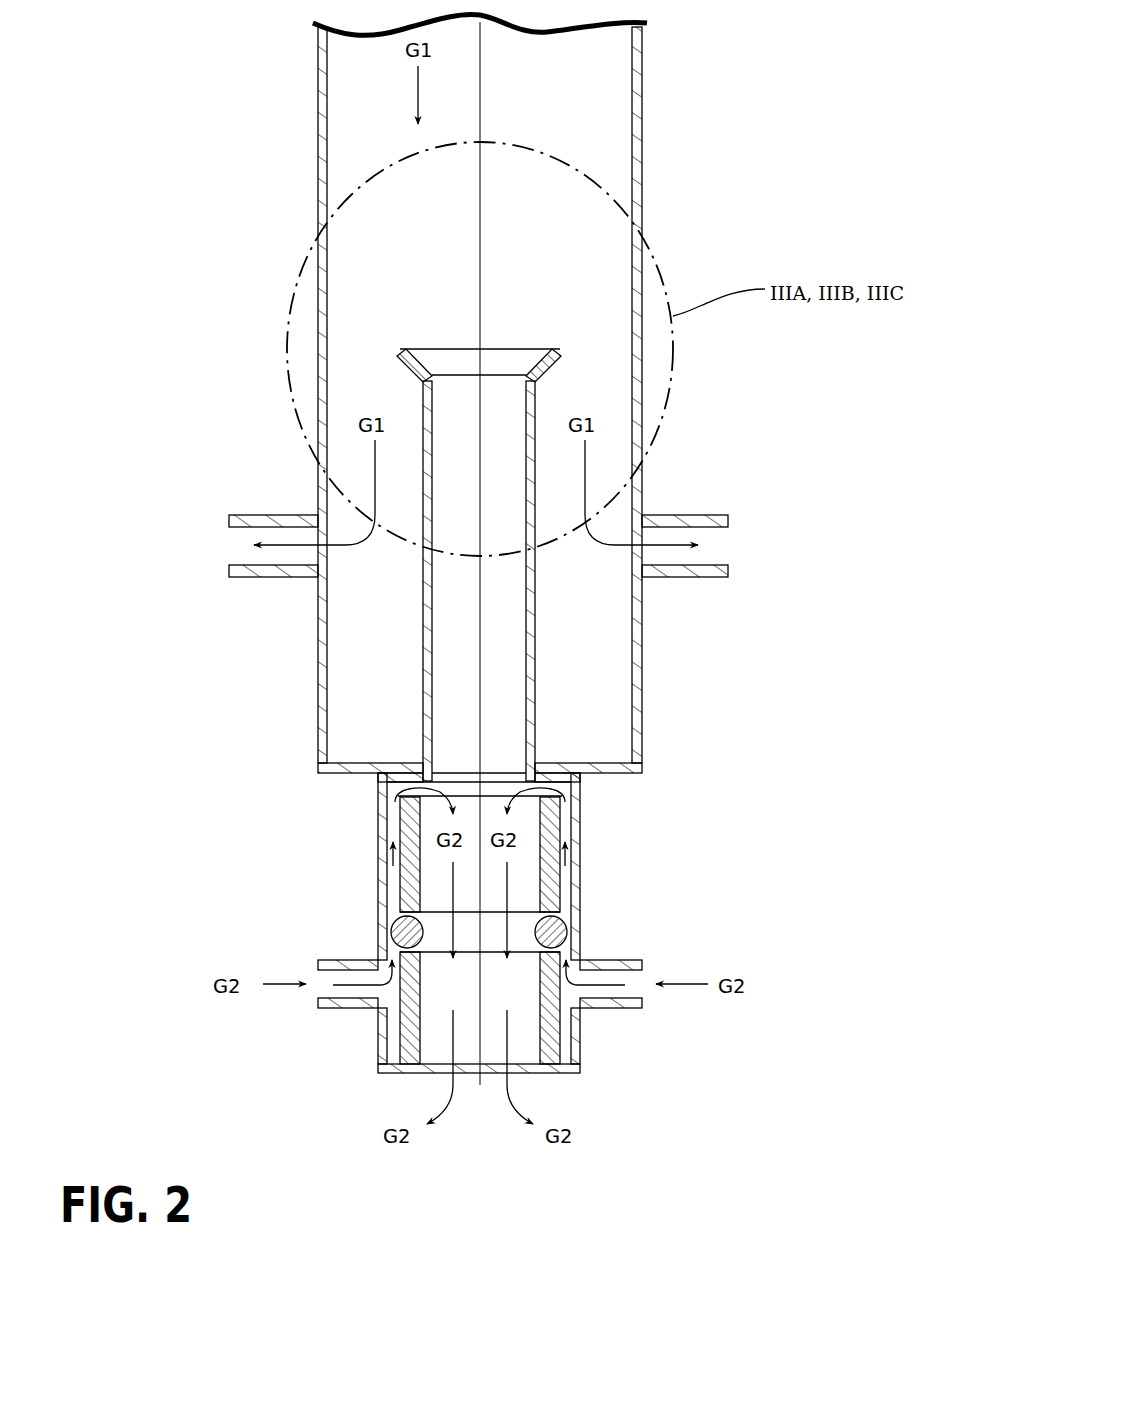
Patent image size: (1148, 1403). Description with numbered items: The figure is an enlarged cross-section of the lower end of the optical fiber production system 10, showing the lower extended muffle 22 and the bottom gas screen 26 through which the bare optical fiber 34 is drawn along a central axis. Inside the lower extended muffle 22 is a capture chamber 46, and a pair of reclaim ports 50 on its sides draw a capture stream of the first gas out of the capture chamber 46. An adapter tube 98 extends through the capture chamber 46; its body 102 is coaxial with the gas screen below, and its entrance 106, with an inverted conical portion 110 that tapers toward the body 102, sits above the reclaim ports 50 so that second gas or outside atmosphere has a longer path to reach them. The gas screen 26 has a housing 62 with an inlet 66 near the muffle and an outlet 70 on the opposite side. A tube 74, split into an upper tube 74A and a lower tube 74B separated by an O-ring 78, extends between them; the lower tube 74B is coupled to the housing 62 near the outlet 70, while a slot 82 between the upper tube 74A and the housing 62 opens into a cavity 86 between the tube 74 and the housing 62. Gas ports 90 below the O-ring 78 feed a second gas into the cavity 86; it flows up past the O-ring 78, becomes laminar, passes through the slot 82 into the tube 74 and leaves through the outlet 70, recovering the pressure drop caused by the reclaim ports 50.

The optical fiber production system 10 is at (814, 166).
The lower extended muffle 22 is at (650, 132).
The bottom gas screen 26 is at (594, 1086).
The bare optical fiber 34 is at (480, 1083).
The capture chamber 46 is at (370, 622).
The reclaim ports 50 is at (270, 506).
The housing 62 is at (378, 860).
The inlet 66 is at (500, 771).
The outlet 70 is at (420, 1081).
The tube 74 is at (557, 876).
The upper tube 74A is at (568, 813).
The lower tube 74B is at (575, 984).
The O-ring 78 is at (396, 930).
The slot 82 is at (398, 812).
The cavity 86 is at (574, 1023).
The gas ports 90 is at (332, 1013).
The adapter tube 98 is at (547, 660).
The body 102 is at (423, 692).
The entrance 106 is at (394, 346).
The conical portion 110 is at (562, 354).